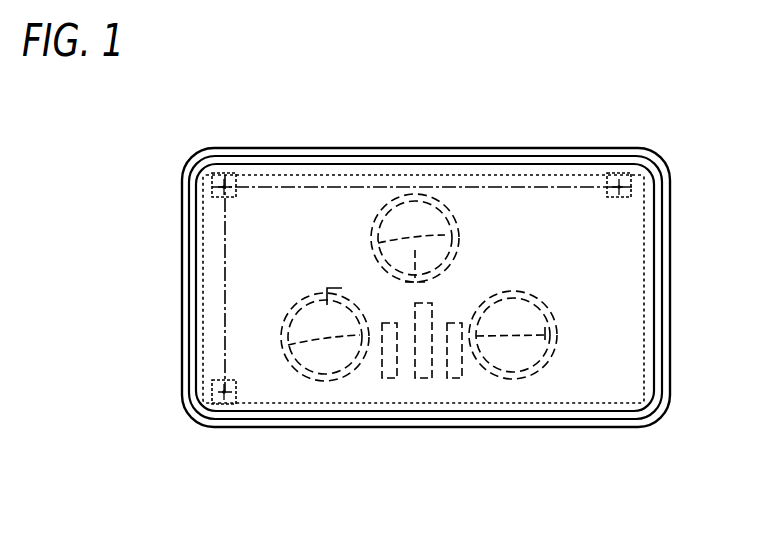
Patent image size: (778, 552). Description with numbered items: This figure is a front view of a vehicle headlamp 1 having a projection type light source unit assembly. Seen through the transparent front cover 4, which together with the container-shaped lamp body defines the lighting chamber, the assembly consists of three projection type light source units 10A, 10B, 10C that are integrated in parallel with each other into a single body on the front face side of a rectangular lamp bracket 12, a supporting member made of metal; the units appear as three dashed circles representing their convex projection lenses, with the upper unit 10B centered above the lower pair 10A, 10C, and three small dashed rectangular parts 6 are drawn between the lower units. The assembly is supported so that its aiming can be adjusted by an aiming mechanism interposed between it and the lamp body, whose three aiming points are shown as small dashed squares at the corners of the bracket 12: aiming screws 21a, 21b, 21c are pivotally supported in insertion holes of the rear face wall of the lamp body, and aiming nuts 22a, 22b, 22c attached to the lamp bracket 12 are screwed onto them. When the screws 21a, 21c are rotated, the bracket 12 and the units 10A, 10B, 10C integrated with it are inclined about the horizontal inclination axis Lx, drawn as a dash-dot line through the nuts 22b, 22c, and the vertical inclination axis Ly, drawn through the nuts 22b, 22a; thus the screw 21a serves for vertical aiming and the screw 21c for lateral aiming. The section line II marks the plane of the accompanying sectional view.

The vehicle headlamp 1 is at (684, 158).
The lamp bracket 12 is at (648, 224).
The transparent front cover 4 is at (630, 352).
The electronic component 6 is at (392, 379).
The projection type light source unit 10A is at (300, 376).
The projection type light source unit 10B is at (448, 206).
The projection type light source unit 10C is at (513, 381).
The aiming screw 21a is at (170, 442).
The aiming nut 22a is at (218, 405).
The aiming screw 21b is at (226, 135).
The aiming nut 22b is at (218, 170).
The aiming screw 21c is at (623, 134).
The aiming nut 22c is at (618, 170).
The horizontal inclination axis Lx is at (342, 187).
The vertical inclination axis Ly is at (227, 310).
The section line II- II is at (413, 90).